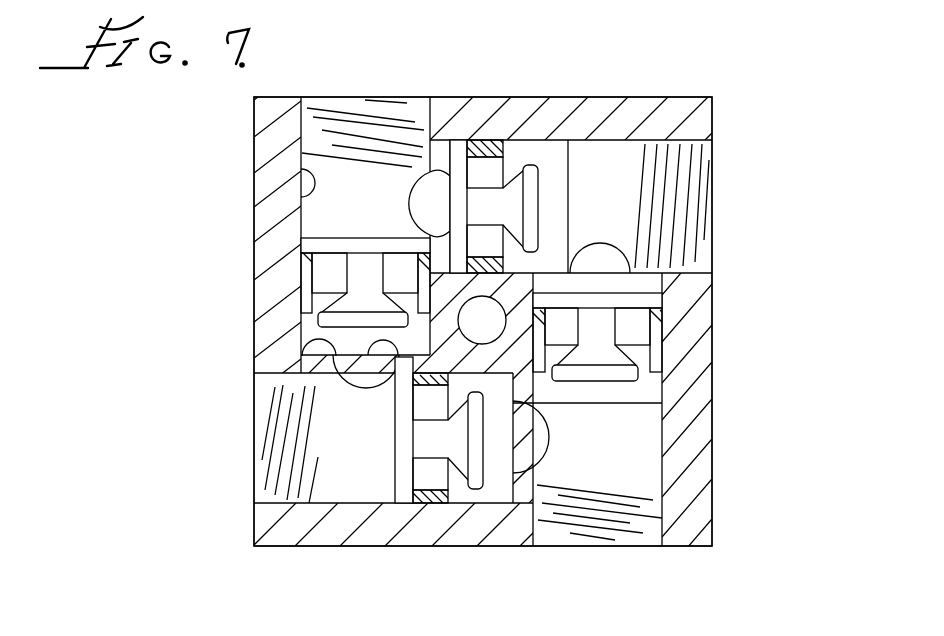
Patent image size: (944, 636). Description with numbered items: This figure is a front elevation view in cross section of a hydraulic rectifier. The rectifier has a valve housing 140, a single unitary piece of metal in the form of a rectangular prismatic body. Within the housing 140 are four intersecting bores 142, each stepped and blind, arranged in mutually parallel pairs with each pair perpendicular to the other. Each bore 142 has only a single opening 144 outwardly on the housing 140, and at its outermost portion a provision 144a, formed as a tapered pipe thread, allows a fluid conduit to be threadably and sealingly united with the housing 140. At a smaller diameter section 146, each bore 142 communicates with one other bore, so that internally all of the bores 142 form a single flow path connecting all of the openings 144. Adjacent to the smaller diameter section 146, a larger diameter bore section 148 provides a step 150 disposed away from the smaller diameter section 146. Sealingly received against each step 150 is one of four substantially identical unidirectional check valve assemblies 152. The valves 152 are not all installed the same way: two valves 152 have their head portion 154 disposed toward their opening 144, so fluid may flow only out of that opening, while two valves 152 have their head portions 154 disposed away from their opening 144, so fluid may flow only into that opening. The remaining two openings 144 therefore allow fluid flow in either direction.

The valve housing 140 is at (636, 108).
The bore 142 is at (610, 140).
The opening 144 is at (312, 112).
The conduit connection provision 144a is at (693, 218).
The smaller diameter section 146 is at (450, 180).
The larger diameter bore section 148 is at (664, 346).
The step 150 is at (664, 300).
The unidirectional check valve assembly 152 is at (343, 232).
The head portion 154 is at (540, 166).